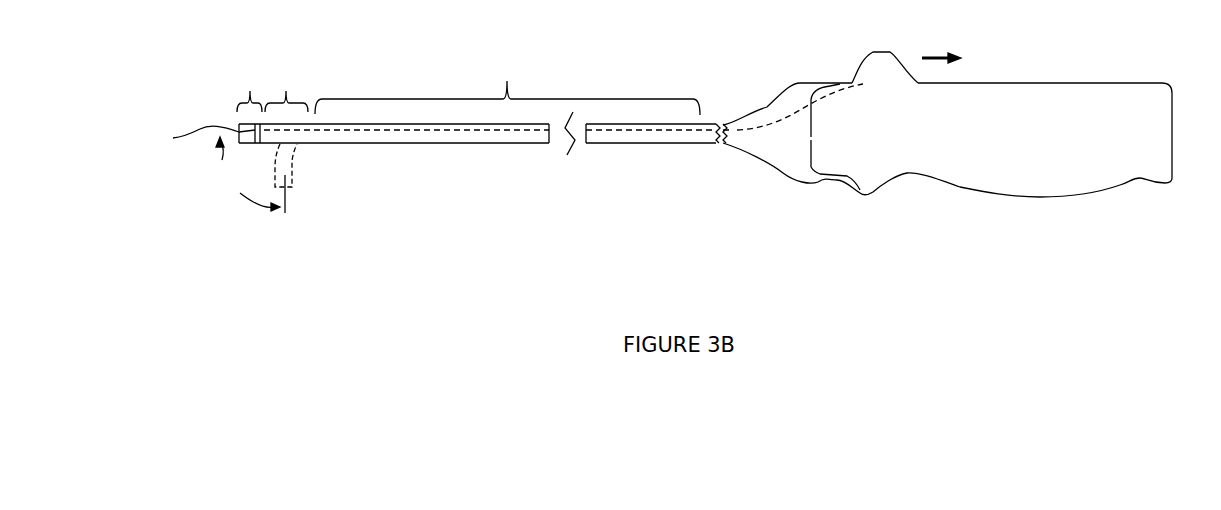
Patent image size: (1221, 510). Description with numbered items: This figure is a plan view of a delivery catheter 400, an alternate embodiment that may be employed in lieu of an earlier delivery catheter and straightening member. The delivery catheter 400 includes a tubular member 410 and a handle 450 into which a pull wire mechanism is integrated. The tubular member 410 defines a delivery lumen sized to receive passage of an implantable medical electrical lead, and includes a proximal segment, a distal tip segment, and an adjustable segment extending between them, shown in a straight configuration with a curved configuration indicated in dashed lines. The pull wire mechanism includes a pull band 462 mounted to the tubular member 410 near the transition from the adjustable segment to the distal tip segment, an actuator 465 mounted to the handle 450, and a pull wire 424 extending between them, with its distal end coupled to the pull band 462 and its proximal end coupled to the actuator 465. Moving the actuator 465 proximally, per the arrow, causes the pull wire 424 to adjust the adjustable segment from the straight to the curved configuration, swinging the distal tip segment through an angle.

The delivery catheter 400 is at (524, 230).
The tubular member 410 is at (507, 133).
The pull wire 424 is at (205, 130).
The handle 450 is at (1080, 118).
The pull band 462 is at (250, 124).
The actuator 465 is at (875, 62).